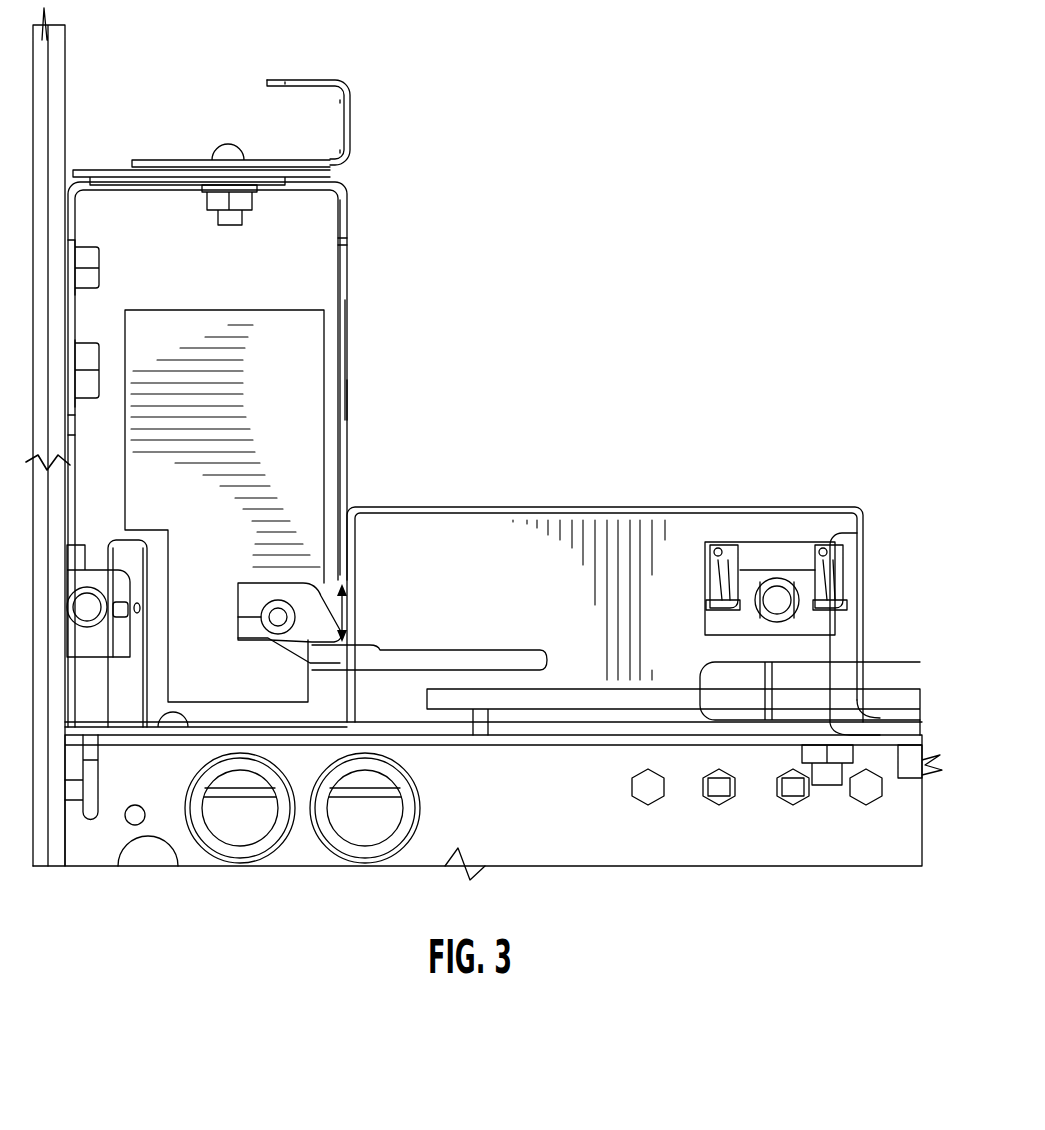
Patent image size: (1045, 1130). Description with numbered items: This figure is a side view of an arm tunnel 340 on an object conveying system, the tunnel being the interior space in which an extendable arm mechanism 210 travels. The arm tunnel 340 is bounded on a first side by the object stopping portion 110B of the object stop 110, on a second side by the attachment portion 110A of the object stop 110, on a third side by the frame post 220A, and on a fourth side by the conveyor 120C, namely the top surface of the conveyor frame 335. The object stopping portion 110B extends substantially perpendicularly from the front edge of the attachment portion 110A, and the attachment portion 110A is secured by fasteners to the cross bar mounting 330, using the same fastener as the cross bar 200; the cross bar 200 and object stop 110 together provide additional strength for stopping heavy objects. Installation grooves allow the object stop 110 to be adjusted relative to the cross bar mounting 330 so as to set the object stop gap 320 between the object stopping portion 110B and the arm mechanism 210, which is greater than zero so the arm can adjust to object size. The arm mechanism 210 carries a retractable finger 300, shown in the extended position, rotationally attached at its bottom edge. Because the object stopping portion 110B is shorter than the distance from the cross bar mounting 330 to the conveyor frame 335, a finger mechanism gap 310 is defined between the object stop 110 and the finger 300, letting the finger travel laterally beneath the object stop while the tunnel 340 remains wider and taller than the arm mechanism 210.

The object stop 110 is at (350, 395).
The attachment portion 110A is at (95, 165).
The object stopping portion 110B is at (345, 352).
The conveyor 120C is at (715, 792).
The cross bar 200 is at (350, 118).
The extendable arm mechanism 210 is at (233, 693).
The frame post 220A is at (48, 100).
The finger 300 is at (342, 657).
The finger mechanism gap 310 is at (356, 596).
The object stop gap 320 is at (332, 342).
The cross bar mounting 330 is at (72, 207).
The conveyor frame 335 is at (617, 820).
The arm tunnel 340 is at (263, 260).